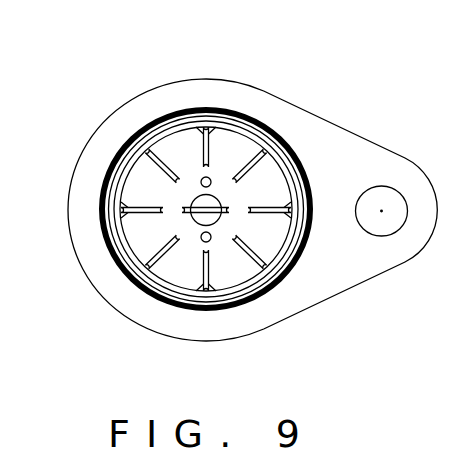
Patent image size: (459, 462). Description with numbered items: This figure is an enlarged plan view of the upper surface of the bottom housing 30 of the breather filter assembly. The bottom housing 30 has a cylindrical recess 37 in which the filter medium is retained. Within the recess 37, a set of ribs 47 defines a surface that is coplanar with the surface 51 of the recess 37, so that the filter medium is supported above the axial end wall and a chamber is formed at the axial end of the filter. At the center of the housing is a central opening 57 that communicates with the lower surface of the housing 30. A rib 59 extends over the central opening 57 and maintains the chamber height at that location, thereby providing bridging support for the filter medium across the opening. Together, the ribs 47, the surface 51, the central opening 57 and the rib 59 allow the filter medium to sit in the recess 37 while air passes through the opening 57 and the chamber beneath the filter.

The bottom housing 30 is at (100, 120).
The recess 37 is at (272, 128).
The ribs 47 is at (134, 218).
The surface 51 is at (163, 296).
The central opening 57 is at (200, 200).
The rib 59 is at (212, 200).